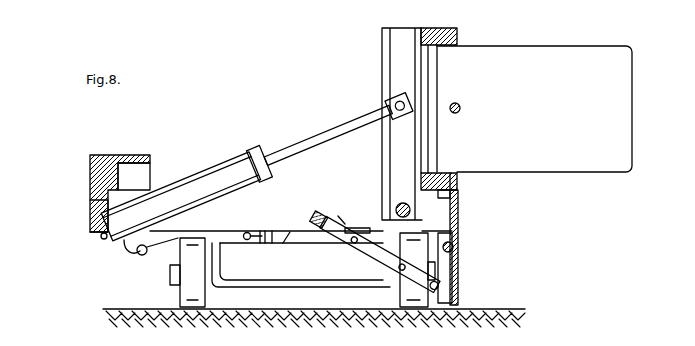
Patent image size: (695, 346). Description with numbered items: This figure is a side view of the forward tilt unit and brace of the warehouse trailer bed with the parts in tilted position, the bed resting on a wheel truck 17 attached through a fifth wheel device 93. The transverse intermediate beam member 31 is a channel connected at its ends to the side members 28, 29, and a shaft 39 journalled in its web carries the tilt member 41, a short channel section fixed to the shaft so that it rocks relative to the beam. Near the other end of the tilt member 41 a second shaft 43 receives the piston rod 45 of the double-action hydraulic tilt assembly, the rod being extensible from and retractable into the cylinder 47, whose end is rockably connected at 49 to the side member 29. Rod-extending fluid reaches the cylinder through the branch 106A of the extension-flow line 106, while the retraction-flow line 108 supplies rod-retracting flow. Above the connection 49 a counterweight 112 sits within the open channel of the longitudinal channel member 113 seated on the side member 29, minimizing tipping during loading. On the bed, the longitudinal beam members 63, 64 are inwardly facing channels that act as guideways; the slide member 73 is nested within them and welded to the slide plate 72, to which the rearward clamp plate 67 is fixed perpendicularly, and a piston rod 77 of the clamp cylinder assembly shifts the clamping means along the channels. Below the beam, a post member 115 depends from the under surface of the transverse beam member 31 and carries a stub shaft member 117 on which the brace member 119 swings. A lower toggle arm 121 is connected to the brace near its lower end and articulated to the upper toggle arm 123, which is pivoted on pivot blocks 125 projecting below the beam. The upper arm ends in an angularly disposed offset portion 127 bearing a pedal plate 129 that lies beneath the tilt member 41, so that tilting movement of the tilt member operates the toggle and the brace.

The longitudinal beam member 64 is at (456, 30).
The tilt member 41 is at (404, 67).
The second shaft 43 is at (400, 100).
The slide plate 72 is at (438, 82).
The piston rod 77 is at (461, 109).
The rearward clamp plate 67 is at (551, 119).
The piston rod 45 is at (332, 134).
The slide member 73 is at (452, 174).
The longitudinal beam member 63 is at (458, 184).
The side member 28 is at (459, 209).
The shaft 39 is at (402, 200).
The post member 115 is at (453, 232).
The stub shaft member 117 is at (454, 248).
The brace member 119 is at (453, 270).
The longitudinal channel member 113 is at (92, 173).
The counterweight 112 is at (118, 176).
The side member 29 is at (90, 213).
The cylinder 47 is at (166, 215).
The rockable connection 49 is at (101, 237).
The branch 106A is at (128, 254).
The extension-flow line 106 is at (147, 251).
The retraction-flow line 108 is at (254, 226).
The transverse intermediate beam member 31 is at (289, 217).
The fifth wheel device 93 is at (289, 233).
The offset portion 127 is at (330, 218).
The pedal plate 129 is at (338, 216).
The pivot block 125 is at (356, 230).
The upper toggle arm 123 is at (363, 251).
The wheel truck 17 is at (278, 295).
The toggle arm 121 is at (394, 287).